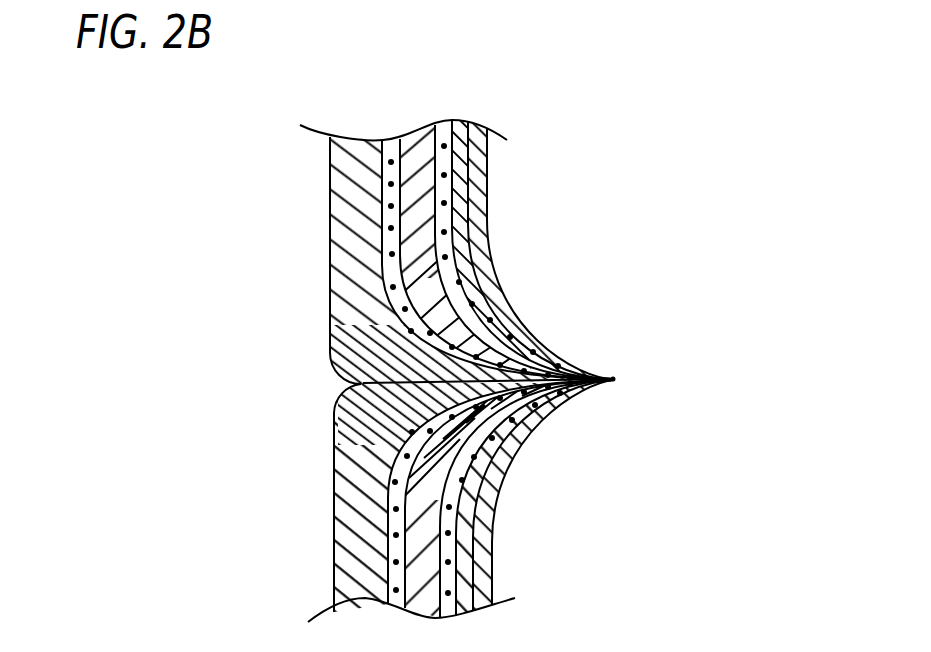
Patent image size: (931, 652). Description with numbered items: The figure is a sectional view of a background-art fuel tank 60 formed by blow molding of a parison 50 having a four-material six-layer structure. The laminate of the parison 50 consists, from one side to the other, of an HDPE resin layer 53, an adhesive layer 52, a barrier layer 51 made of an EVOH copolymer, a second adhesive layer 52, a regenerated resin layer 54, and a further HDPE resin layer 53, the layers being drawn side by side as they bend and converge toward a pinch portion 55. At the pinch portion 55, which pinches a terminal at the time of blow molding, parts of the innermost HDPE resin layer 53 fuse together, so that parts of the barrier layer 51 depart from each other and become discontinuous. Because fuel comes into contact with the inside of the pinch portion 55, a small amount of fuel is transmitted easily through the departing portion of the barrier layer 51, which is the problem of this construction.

The parison 50 is at (486, 238).
The barrier layer 51 is at (413, 135).
The adhesive layer 52 is at (388, 138).
The HDPE resin layer 53 is at (334, 227).
The regenerated resin layer 54 is at (462, 120).
The pinch portion 55 is at (626, 363).
The fuel tank 60 is at (598, 110).